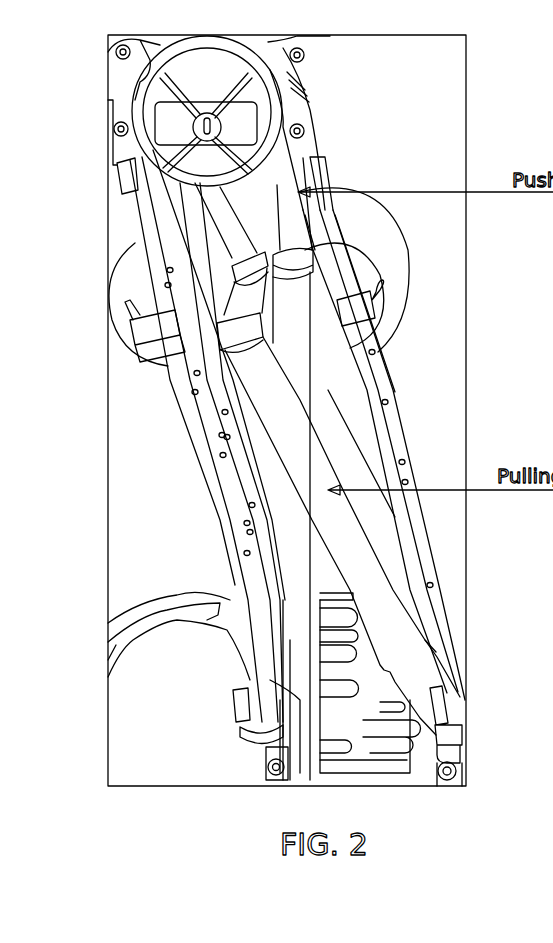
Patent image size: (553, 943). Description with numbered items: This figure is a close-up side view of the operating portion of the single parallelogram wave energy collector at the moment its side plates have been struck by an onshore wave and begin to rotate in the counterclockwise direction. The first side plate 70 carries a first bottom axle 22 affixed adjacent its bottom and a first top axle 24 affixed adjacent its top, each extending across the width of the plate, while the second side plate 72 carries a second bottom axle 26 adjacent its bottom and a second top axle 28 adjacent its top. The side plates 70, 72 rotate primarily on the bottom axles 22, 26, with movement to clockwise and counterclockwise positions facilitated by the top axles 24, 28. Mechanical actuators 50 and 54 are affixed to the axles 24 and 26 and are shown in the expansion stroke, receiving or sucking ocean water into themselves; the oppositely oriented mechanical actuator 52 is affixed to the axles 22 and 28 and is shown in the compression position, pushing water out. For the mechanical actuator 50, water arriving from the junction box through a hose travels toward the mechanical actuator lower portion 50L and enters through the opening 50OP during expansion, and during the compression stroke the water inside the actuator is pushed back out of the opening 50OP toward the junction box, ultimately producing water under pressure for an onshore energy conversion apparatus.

The first bottom axle 22 is at (277, 775).
The first top axle 24 is at (113, 128).
The second bottom axle 26 is at (445, 773).
The second top axle 28 is at (305, 131).
The mechanical actuator 50 is at (375, 577).
The mechanical actuator lower portion 50L is at (463, 707).
The opening 50OP is at (460, 778).
The mechanical actuator 52 is at (340, 345).
The mechanical actuator 54 is at (352, 424).
The first side plate 70 is at (182, 277).
The second side plate 72 is at (372, 385).